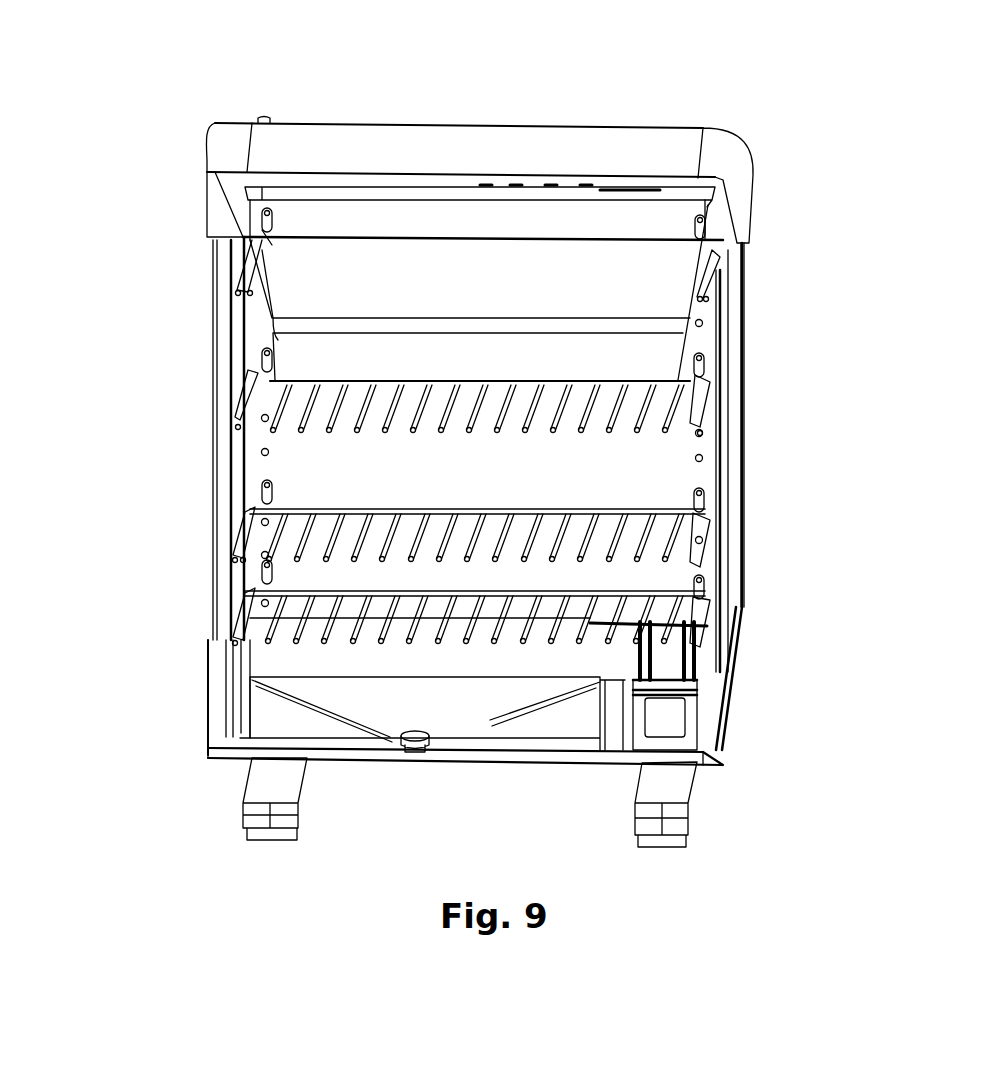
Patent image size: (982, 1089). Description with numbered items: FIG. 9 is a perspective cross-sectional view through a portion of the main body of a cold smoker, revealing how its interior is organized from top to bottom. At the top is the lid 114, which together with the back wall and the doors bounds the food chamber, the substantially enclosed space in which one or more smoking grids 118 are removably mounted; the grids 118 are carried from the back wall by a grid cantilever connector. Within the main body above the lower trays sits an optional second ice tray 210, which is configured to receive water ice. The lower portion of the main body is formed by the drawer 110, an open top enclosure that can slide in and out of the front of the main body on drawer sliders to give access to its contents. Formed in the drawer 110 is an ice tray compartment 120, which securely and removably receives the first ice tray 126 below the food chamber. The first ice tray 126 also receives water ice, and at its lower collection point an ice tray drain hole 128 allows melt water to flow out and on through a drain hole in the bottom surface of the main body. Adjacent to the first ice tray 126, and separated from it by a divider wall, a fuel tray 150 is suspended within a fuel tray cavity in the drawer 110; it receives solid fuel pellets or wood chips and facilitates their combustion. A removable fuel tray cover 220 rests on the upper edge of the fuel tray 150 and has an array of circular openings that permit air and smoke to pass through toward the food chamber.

The drawer 110 is at (206, 717).
The lid 114 is at (428, 127).
The smoking grids 118 is at (677, 590).
The ice tray compartment 120 is at (233, 750).
The first ice tray 126 is at (507, 733).
The ice tray drain hole 128 is at (413, 752).
The fuel tray 150 is at (663, 712).
The second ice tray 210 is at (483, 295).
The fuel tray cover 220 is at (667, 660).